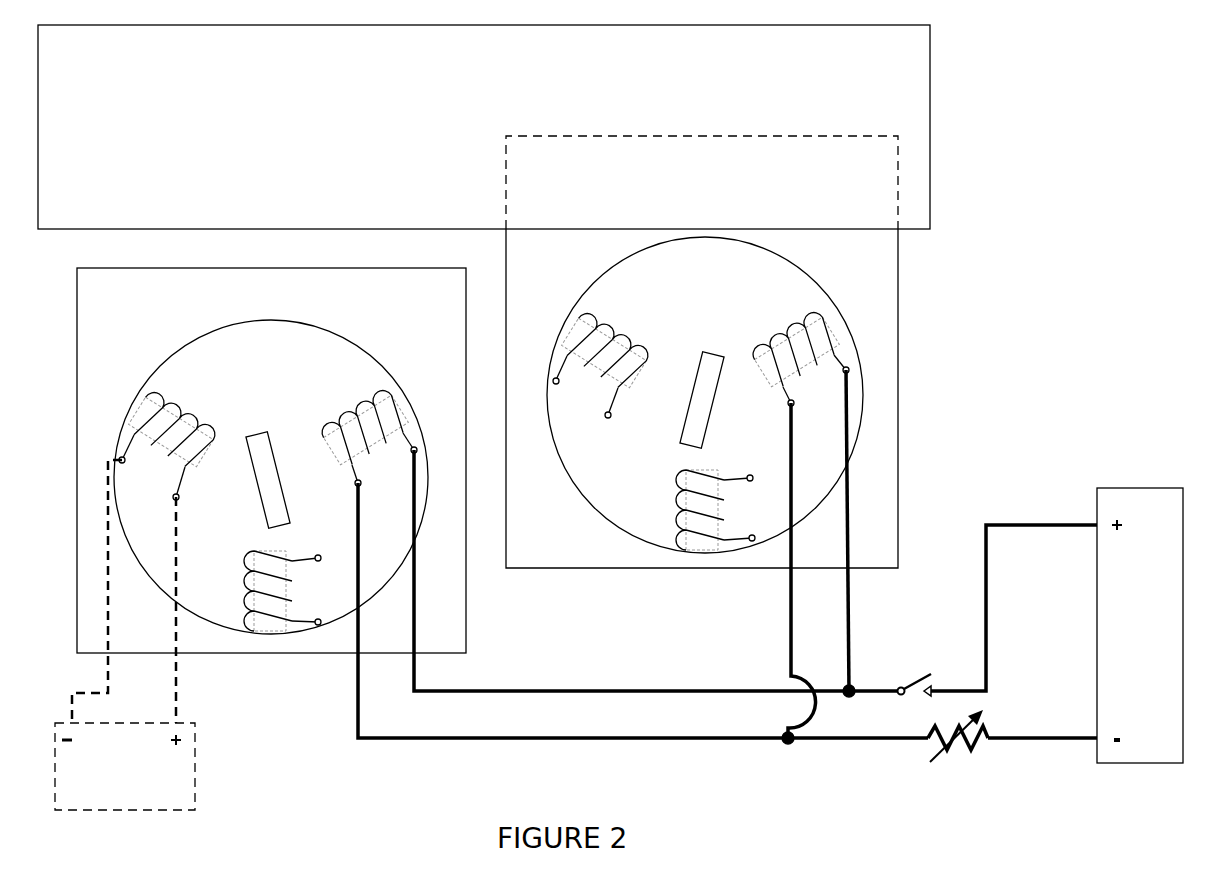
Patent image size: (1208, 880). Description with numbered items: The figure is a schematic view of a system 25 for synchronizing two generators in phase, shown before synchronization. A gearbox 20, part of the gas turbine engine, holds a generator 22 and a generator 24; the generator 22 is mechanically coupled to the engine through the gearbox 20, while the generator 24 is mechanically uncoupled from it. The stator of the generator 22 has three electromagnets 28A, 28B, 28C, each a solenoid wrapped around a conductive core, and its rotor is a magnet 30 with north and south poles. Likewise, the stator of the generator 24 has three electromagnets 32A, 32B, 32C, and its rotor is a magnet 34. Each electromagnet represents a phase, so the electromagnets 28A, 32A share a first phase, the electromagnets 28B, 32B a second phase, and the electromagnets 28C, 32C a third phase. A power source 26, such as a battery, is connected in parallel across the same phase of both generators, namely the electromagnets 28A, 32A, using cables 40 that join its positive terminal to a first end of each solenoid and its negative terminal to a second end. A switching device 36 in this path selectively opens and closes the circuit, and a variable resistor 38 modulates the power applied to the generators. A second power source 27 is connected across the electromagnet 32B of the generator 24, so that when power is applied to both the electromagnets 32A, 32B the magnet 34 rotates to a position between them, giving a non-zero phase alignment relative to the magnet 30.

The gearbox 20 is at (142, 87).
The generator 22 is at (545, 276).
The generator 24 is at (140, 310).
The system 25 is at (1010, 294).
The power source 26 is at (1155, 636).
The second power source 27 is at (140, 779).
The electromagnet 28A is at (752, 311).
The electromagnet 28B is at (618, 296).
The electromagnet 28C is at (656, 501).
The magnet 30 is at (691, 395).
The electromagnet 32A is at (323, 404).
The electromagnet 32B is at (184, 386).
The electromagnet 32C is at (222, 591).
The magnet 34 is at (257, 485).
The switching device 36 is at (926, 658).
The variable resistor 38 is at (949, 781).
The cables 40 is at (400, 740).